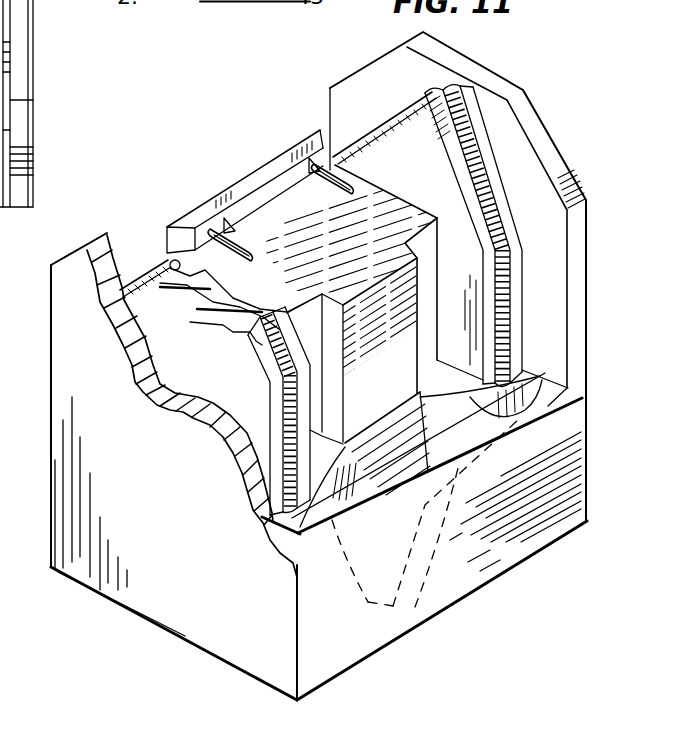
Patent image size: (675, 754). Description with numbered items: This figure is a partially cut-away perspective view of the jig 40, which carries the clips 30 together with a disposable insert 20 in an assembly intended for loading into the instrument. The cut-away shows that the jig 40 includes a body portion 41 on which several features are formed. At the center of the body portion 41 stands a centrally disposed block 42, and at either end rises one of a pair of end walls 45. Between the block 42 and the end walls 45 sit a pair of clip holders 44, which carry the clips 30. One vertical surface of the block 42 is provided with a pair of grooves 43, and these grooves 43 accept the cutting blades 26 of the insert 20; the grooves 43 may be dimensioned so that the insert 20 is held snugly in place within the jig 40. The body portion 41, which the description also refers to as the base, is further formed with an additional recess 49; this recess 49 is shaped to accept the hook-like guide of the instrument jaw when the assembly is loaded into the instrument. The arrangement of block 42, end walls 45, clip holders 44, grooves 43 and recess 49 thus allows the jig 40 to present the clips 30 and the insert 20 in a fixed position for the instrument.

The disposable insert 20 is at (193, 202).
The cutting blades 26 is at (227, 228).
The grooves 43 is at (348, 188).
The clips 30 is at (286, 395).
The jig 40 is at (95, 606).
The body portion 41 is at (445, 585).
The block 42 is at (312, 292).
The clip holders 44 is at (187, 357).
The end walls 45 is at (70, 340).
The recess 49 is at (397, 466).